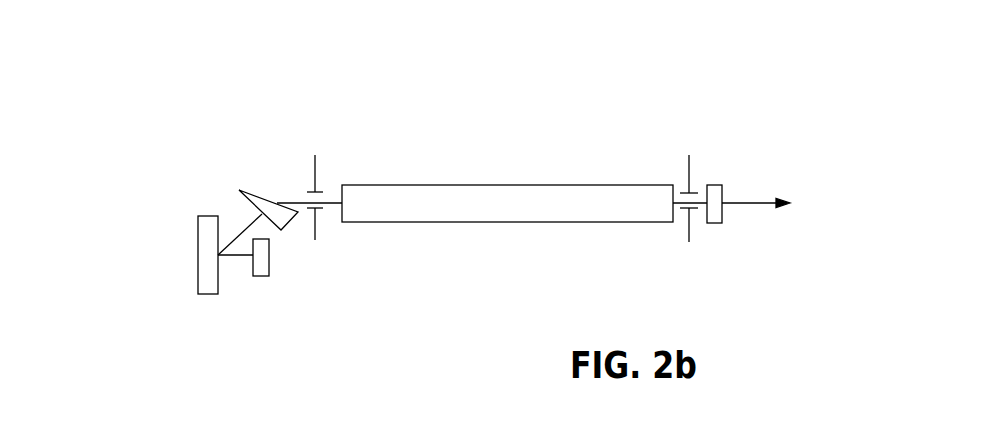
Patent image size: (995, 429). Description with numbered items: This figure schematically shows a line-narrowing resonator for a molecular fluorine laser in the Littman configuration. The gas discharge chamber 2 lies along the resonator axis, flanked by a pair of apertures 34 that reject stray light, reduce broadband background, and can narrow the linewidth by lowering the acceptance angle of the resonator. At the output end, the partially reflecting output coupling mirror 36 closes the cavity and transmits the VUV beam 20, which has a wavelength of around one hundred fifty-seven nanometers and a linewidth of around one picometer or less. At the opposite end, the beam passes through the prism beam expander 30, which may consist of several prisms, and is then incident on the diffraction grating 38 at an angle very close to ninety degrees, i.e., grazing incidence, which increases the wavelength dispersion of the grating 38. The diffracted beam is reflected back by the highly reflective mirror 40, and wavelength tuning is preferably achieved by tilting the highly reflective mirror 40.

The chamber 2 is at (583, 222).
The VUV beam 20 is at (795, 197).
The beam expander 30 is at (227, 182).
The apertures 34 is at (668, 145).
The partially reflecting output coupling mirror 36 is at (720, 160).
The diffraction grating 38 is at (198, 278).
The highly reflective mirror 40 is at (269, 265).